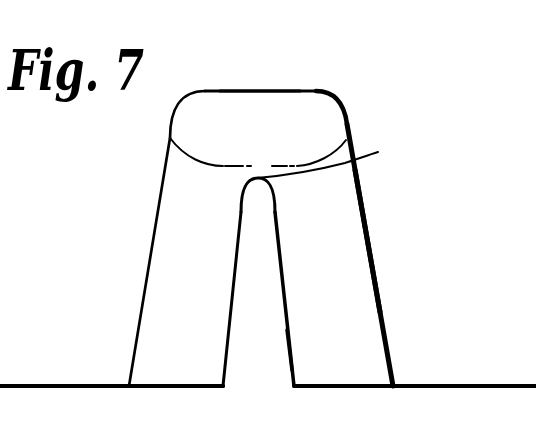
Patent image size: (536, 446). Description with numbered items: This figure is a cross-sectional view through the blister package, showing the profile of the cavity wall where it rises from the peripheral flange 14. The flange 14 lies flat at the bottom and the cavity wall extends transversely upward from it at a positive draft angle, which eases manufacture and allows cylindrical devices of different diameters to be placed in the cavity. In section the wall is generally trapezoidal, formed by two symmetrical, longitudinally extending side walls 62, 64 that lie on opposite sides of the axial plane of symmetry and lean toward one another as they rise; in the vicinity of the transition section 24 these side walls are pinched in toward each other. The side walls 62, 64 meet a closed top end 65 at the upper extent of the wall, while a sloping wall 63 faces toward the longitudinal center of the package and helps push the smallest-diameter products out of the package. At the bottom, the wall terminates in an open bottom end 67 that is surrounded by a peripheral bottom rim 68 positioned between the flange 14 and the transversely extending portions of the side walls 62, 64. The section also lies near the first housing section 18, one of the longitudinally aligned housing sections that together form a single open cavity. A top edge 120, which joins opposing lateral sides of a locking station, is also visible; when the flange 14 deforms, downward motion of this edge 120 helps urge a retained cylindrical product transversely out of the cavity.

The peripheral flange 14 is at (60, 385).
The first housing section 18 is at (367, 226).
The transition section 24 is at (290, 345).
The side wall 62 is at (145, 283).
The sloping wall 63 is at (272, 132).
The side wall 64 is at (378, 303).
The closed top end 65 is at (265, 90).
The open bottom end 67 is at (247, 371).
The peripheral bottom rim 68 is at (176, 388).
The top edge 120 is at (334, 157).